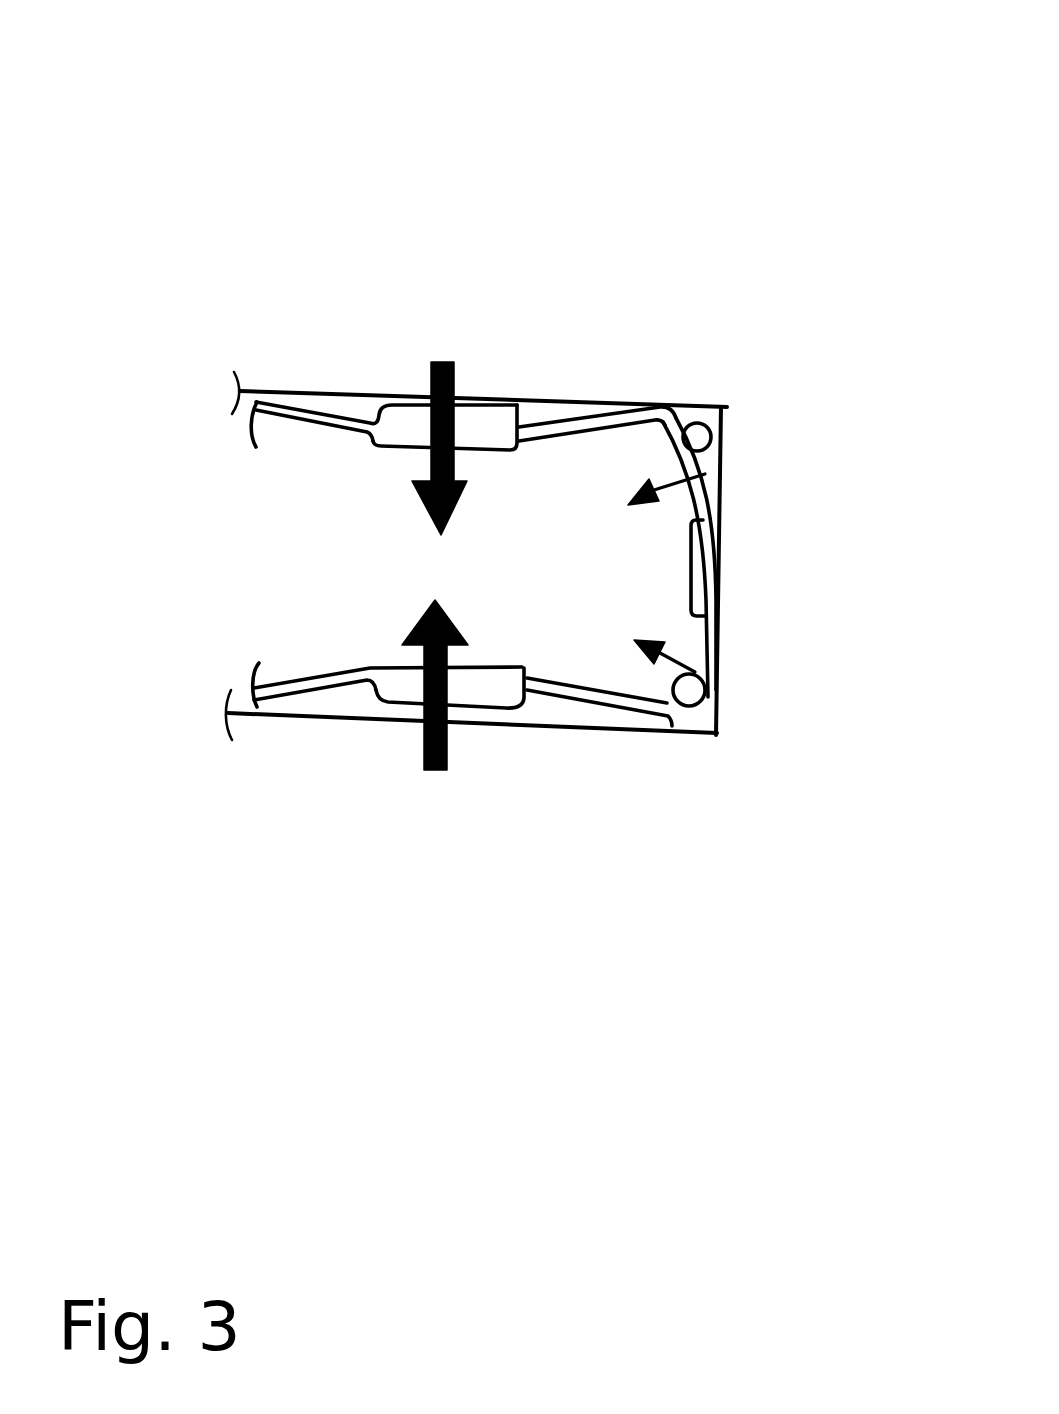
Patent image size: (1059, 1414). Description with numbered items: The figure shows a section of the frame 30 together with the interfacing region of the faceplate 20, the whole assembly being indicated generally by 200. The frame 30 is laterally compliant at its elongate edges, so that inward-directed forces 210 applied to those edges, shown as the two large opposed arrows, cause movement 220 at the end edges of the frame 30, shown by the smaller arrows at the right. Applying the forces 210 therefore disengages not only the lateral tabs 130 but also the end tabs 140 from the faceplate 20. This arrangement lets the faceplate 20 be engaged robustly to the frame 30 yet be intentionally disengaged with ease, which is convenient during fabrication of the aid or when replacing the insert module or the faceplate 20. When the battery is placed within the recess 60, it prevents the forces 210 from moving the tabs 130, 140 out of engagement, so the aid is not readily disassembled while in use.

The section of frame and faceplate region 200 is at (622, 138).
The faceplate 20 is at (550, 271).
The frame 30 is at (297, 432).
The recess 60 is at (568, 577).
The lateral tabs 130 is at (495, 428).
The end tabs 140 is at (686, 432).
The inward-directed forces 210 is at (433, 390).
The movement 220 is at (750, 473).